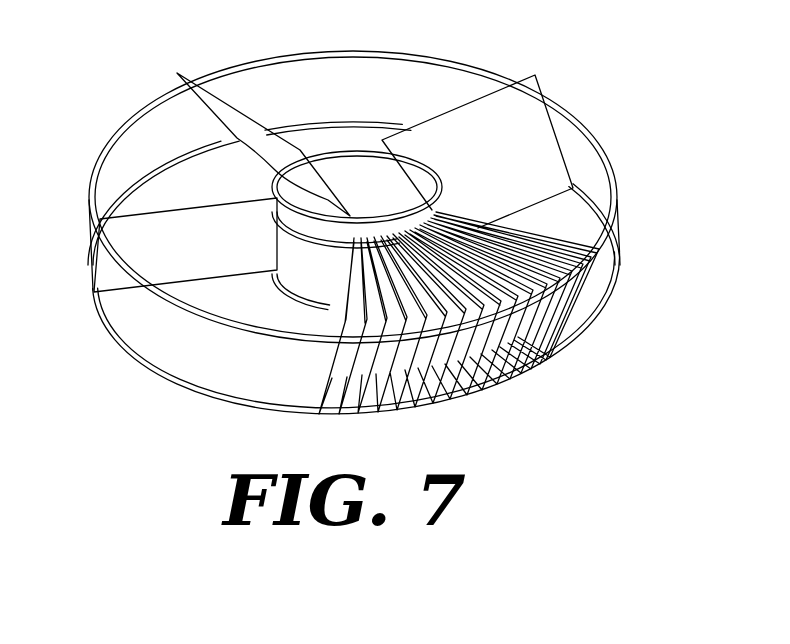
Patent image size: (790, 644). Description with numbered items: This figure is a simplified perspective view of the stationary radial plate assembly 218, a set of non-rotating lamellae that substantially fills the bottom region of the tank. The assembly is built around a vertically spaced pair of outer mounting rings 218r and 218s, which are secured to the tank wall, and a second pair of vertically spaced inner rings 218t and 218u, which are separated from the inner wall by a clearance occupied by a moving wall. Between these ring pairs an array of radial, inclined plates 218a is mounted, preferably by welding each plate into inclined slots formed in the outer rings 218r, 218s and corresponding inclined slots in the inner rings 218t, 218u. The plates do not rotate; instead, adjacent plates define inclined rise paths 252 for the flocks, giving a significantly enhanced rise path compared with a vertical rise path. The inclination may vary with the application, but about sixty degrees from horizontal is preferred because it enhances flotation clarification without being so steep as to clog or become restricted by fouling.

The stationary radial plate assembly 218 is at (643, 239).
The outer mounting ring 218r is at (246, 69).
The outer mounting ring 218s is at (130, 352).
The inner ring 218t is at (349, 151).
The inner ring 218u is at (368, 217).
The radial inclined plate 218a is at (520, 118).
The inclined rise path 252 is at (536, 358).